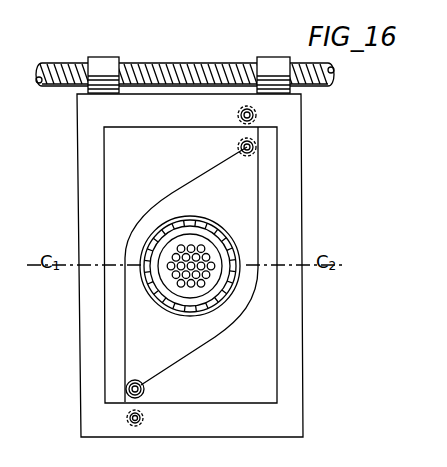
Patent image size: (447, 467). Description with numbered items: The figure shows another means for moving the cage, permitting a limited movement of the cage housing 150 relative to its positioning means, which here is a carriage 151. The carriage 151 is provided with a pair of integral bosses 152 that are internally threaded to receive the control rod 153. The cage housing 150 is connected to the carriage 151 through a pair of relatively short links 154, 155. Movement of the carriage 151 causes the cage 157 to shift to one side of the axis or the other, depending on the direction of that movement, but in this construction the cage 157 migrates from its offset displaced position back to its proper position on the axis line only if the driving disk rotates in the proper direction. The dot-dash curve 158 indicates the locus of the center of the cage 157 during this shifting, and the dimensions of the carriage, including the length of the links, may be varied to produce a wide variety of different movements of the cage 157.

The cage housing 150 is at (204, 167).
The carriage 151 is at (297, 179).
The integral bosses 152 is at (108, 63).
The control rod 153 is at (200, 51).
The link 154 is at (146, 396).
The link 155 is at (238, 138).
The cage 157 is at (223, 305).
The dot-dash curve 158 is at (193, 262).